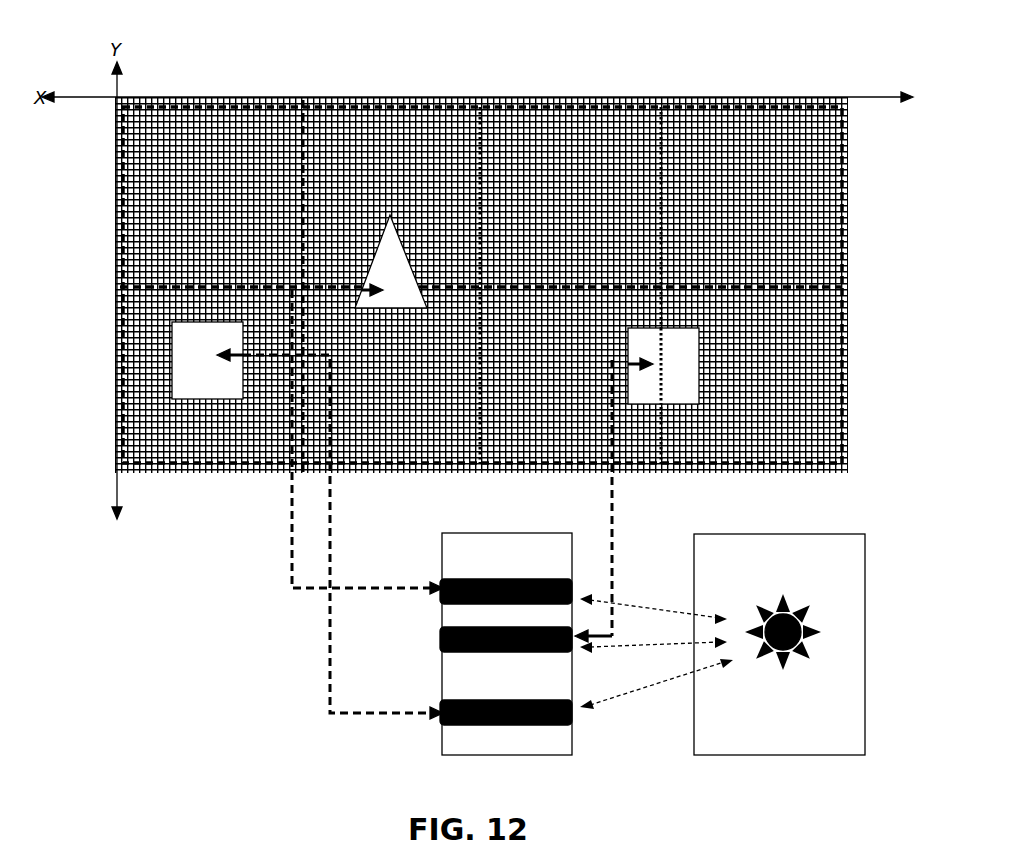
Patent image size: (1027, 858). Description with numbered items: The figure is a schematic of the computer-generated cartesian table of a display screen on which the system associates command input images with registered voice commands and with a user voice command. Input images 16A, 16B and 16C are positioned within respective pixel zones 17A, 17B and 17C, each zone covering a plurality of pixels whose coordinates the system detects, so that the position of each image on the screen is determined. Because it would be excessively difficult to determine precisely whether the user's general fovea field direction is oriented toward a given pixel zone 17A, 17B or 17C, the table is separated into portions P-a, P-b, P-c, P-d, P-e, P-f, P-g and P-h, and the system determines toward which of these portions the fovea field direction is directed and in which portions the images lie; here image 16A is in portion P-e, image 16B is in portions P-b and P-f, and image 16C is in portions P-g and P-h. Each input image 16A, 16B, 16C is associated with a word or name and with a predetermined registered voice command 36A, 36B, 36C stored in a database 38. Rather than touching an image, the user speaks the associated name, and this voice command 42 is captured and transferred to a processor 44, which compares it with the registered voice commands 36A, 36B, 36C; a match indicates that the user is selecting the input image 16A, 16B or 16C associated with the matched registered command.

The input image 16A is at (307, 520).
The input image 16B is at (367, 404).
The input image 16C is at (637, 485).
The pixel zone 17A is at (163, 329).
The pixel zone 17B is at (374, 222).
The pixel zone 17C is at (705, 316).
The registered voice command 36A is at (505, 580).
The registered voice command 36B is at (441, 639).
The registered voice command 36C is at (558, 726).
The database 38 is at (441, 556).
The voice command 42 is at (829, 613).
The processor 44 is at (874, 714).
The portion P-a is at (204, 134).
The portion P-b is at (381, 145).
The portion P-c is at (632, 122).
The portion P-d is at (765, 147).
The portion P-e is at (198, 440).
The portion P-f is at (450, 315).
The portion P-g is at (540, 370).
The portion P-h is at (843, 356).